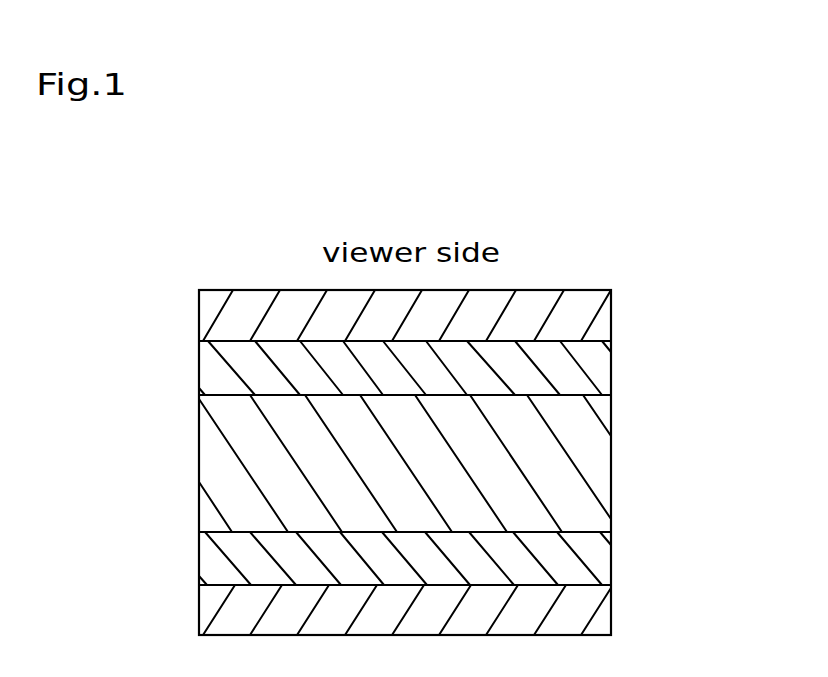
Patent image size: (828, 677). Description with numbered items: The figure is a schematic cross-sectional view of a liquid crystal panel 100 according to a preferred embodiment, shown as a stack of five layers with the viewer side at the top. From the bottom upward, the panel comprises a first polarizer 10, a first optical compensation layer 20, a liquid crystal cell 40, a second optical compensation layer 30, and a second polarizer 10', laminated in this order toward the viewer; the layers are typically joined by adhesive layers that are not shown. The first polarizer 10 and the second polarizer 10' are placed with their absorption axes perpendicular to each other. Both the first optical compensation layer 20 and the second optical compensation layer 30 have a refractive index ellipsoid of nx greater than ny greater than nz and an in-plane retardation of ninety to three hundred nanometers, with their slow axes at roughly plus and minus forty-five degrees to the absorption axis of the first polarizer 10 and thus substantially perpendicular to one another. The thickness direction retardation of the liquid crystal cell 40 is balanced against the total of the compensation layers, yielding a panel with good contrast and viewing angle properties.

The liquid crystal panel 100 is at (757, 191).
The second polarizer 10' is at (458, 315).
The second optical compensation layer 30 is at (598, 363).
The liquid crystal cell 40 is at (598, 464).
The first optical compensation layer 20 is at (598, 557).
The first polarizer 10 is at (455, 610).